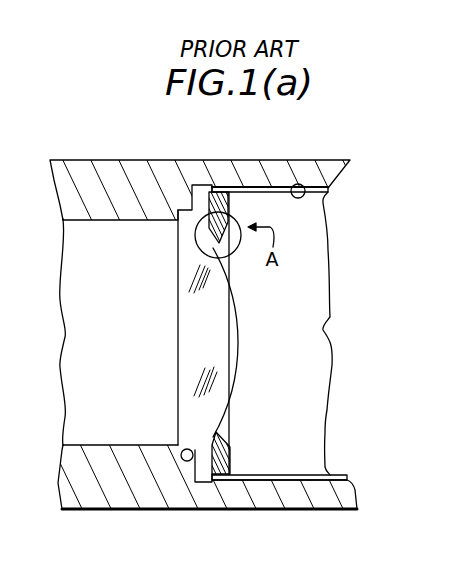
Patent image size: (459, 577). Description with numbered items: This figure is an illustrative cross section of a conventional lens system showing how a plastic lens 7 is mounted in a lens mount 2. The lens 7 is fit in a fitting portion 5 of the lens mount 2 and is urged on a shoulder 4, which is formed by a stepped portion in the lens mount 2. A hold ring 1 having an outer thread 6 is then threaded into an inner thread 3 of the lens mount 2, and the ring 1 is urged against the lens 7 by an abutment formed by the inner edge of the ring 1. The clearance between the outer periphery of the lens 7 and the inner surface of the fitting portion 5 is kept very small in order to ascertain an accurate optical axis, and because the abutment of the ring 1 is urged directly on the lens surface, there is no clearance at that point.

The hold ring 1 is at (219, 205).
The lens mount 2 is at (238, 170).
The inner thread 3 is at (300, 184).
The shoulder 4 is at (177, 448).
The fitting portion 5 is at (186, 462).
The outer thread 6 is at (213, 483).
The plastic lens 7 is at (232, 366).